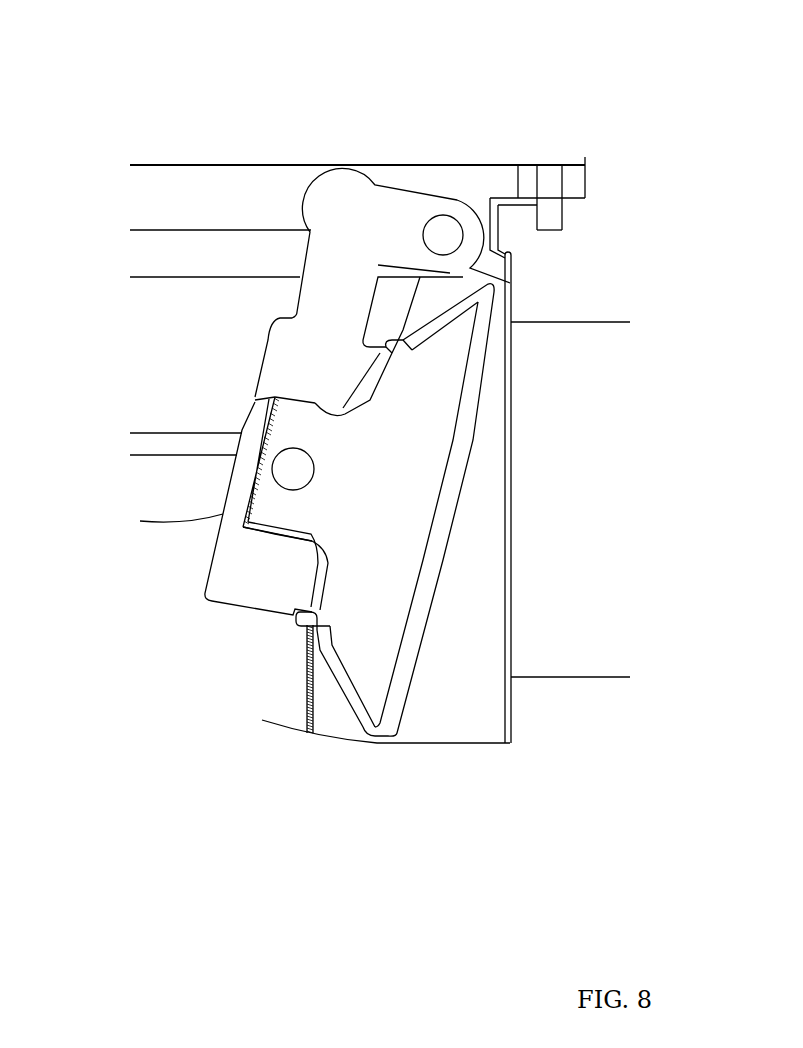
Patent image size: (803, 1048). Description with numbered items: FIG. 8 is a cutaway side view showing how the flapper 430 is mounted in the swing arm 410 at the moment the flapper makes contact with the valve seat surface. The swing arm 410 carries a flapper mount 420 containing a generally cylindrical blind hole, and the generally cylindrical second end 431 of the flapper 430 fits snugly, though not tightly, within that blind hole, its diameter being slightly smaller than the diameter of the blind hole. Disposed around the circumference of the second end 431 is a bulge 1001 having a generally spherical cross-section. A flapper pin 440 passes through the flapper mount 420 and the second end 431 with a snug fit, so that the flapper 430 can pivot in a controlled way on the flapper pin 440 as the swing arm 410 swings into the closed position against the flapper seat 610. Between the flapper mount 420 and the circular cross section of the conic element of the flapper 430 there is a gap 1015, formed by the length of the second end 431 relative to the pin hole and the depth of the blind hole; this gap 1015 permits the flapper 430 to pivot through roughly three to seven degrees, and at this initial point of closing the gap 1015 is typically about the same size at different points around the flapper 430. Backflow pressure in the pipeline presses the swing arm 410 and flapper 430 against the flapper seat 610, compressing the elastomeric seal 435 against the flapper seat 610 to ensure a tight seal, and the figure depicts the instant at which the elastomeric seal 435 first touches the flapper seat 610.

The swing arm 410 is at (338, 215).
The flapper mount 420 is at (238, 577).
The flapper 430 is at (536, 510).
The second end 431 is at (290, 428).
The elastomeric seal 435 is at (460, 500).
The flapper pin 440 is at (300, 475).
The flapper seat 610 is at (513, 708).
The bulge 1001 is at (315, 403).
The gap 1015 is at (388, 352).